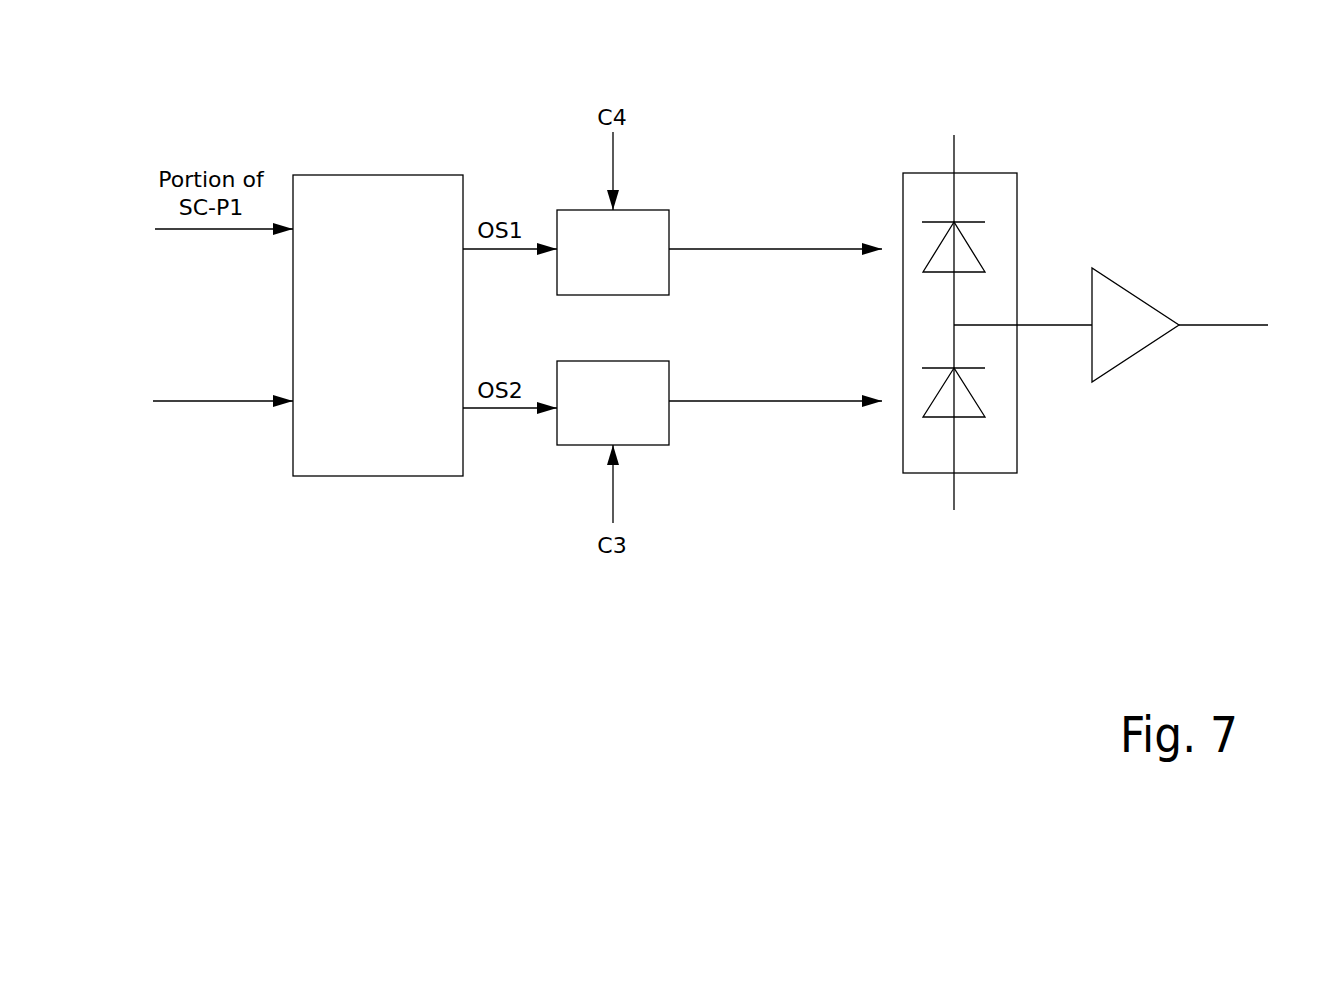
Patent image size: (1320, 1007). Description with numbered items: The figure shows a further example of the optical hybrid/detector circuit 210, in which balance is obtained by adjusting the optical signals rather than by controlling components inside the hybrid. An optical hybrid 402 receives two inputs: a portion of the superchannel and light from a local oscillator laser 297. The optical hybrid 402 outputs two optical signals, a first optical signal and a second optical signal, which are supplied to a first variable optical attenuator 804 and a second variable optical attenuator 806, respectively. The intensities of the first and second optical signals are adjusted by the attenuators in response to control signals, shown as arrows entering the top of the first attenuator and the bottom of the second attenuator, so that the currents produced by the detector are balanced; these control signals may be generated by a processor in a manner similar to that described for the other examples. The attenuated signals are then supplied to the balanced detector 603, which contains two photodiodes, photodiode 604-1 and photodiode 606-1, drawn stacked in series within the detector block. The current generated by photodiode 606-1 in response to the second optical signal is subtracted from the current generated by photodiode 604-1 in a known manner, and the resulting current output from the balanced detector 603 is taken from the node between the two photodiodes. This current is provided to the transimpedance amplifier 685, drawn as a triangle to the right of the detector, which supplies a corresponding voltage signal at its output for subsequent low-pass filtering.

The optical hybrid/detector circuit 210 is at (223, 744).
The optical hybrid 402 is at (397, 175).
The local oscillator laser 297 is at (223, 366).
The first variable optical attenuator 804 is at (642, 210).
The second variable optical attenuator 806 is at (640, 445).
The balanced detector 603 is at (1017, 208).
The photodiode 604-1 is at (940, 222).
The photodiode 606-1 is at (970, 418).
The transimpedance amplifier 685 is at (1147, 302).